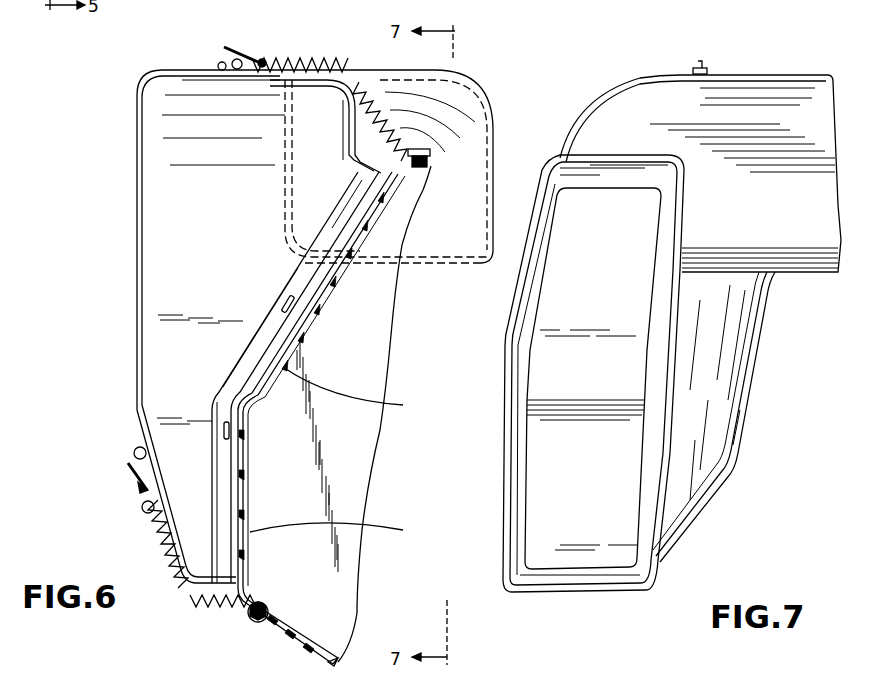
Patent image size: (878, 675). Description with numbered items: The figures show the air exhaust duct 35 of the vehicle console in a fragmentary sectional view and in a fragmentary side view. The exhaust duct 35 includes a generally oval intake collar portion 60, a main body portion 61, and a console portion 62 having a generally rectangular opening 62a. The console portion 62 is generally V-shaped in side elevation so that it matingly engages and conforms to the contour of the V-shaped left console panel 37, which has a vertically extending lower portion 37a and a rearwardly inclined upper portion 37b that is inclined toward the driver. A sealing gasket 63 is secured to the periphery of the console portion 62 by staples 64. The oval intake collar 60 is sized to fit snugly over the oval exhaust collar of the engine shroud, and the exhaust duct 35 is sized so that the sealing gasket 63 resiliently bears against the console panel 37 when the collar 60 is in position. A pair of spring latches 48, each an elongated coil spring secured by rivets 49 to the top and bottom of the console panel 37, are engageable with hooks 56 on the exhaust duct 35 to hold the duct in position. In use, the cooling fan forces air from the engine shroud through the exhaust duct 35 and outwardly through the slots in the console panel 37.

In FIG. 6, the exhaust duct 35 is at (165, 229).
In FIG. 6, the left console panel 37 is at (392, 405).
In FIG. 6, the lower portion of left panel 37a is at (392, 530).
In FIG. 6, the upper portion of left panel 37b is at (330, 293).
In FIG. 6, the spring latch 48 is at (330, 66).
In FIG. 6, the rivet 49 is at (420, 150).
In FIG. 6, the hook 56 is at (250, 58).
In FIG. 7, the hook 56 is at (702, 64).
In FIG. 6, the oval intake collar portion 60 is at (475, 95).
In FIG. 6, the main body portion 61 is at (157, 120).
In FIG. 7, the main body portion 61 is at (743, 330).
In FIG. 6, the console portion 62 is at (263, 343).
In FIG. 7, the console portion 62 is at (517, 390).
In FIG. 7, the rectangular opening 62a is at (600, 560).
In FIG. 6, the sealing gasket 63 is at (210, 450).
In FIG. 7, the sealing gasket 63 is at (513, 305).
In FIG. 6, the staple 64 is at (285, 300).